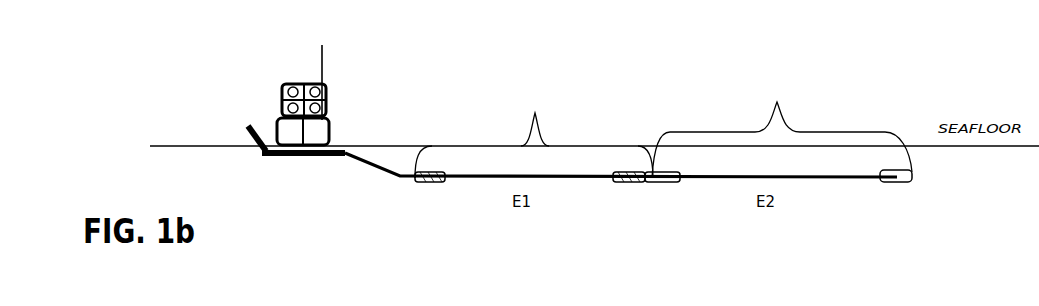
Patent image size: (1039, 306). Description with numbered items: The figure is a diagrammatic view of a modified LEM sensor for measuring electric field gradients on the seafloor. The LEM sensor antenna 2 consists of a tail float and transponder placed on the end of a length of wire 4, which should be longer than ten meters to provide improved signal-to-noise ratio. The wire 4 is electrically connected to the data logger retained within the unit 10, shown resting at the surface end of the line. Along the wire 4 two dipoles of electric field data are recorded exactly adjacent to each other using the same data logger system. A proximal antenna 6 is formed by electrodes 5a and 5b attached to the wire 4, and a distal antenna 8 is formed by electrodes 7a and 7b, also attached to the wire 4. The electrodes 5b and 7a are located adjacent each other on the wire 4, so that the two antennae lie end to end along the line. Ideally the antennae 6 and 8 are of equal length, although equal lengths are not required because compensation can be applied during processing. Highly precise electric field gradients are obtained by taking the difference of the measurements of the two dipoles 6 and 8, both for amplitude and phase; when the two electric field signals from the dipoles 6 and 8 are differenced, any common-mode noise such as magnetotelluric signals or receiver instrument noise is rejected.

The unit 10 is at (280, 112).
The distal antenna 8 is at (534, 129).
The proximal antenna 6 is at (782, 129).
The wire 4 is at (590, 182).
The electrode 7b is at (440, 183).
The electrode 7a is at (634, 184).
The electrode 5b is at (675, 184).
The electrode 5a is at (897, 185).
The LEM sensor antenna 2 is at (628, 247).